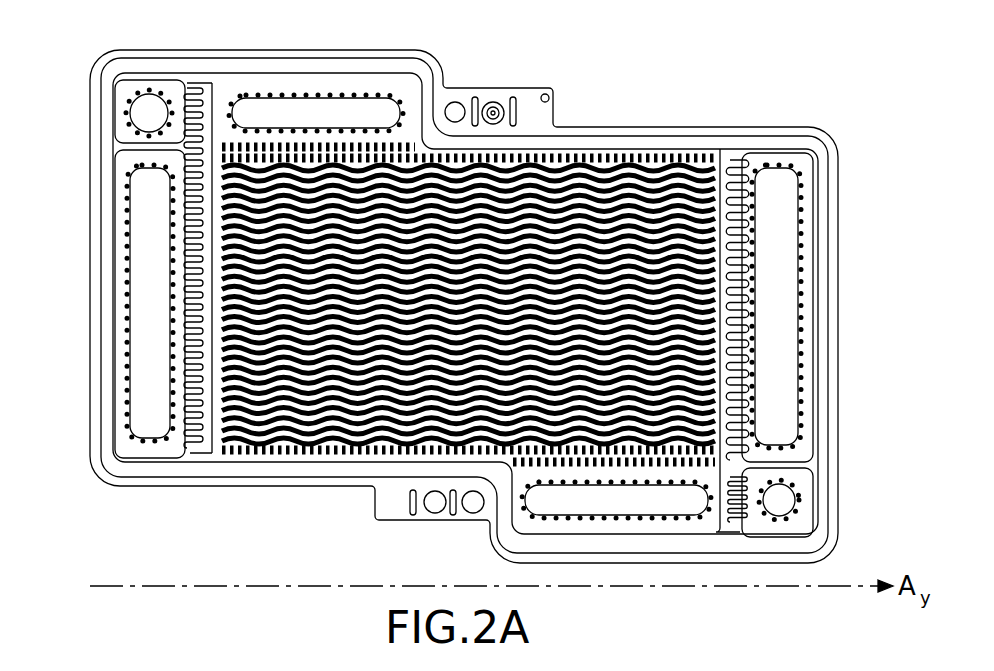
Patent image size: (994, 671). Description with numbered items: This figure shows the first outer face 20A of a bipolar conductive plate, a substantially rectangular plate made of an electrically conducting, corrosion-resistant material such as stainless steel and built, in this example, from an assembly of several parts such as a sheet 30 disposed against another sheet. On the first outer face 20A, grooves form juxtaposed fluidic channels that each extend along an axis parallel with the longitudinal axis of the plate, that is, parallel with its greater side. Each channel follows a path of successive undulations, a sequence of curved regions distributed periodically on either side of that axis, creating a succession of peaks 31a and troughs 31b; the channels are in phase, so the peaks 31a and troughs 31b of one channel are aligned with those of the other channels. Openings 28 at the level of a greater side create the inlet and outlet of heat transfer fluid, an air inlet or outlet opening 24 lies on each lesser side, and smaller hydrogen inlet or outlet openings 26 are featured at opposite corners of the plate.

The sheet 30 is at (145, 53).
The first outer face 20A is at (670, 143).
The air inlet or outlet opening 24 is at (145, 212).
The hydrogen inlet or outlet opening 26 is at (788, 500).
The opening 28 is at (280, 108).
The undulation peak 31a is at (618, 180).
The undulation trough 31b is at (468, 226).